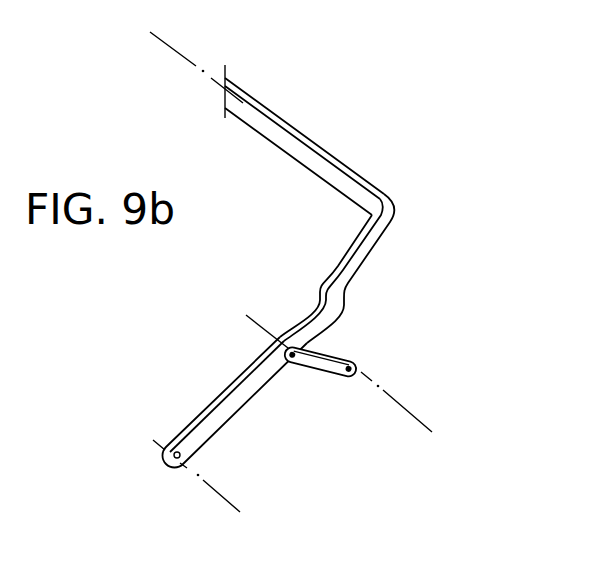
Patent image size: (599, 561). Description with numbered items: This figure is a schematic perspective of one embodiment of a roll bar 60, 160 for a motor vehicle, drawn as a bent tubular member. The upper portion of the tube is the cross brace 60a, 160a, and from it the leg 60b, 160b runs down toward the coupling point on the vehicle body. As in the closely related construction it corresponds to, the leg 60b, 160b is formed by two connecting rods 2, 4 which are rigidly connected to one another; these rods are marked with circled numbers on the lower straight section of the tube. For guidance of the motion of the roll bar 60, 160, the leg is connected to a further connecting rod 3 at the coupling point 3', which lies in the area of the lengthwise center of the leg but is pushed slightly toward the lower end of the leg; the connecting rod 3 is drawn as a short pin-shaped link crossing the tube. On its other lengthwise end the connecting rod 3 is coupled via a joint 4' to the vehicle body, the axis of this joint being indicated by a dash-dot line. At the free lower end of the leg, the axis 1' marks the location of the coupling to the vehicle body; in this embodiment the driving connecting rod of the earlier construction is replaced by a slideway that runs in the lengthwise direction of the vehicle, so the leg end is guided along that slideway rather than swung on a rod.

The roll bar 60 is at (351, 259).
The tubular hinge member (alternative embodiment) 160 is at (351, 259).
The cross brace 60a is at (315, 132).
The first leg of tubular member (alternative embodiment) 160a is at (272, 112).
The leg 60b is at (412, 268).
The second leg of tubular member (alternative embodiment) 160b is at (367, 254).
The connecting rod 2 is at (232, 397).
The connecting rod 4 is at (232, 397).
The connecting rod 3 is at (319, 396).
The coupling point 3' is at (320, 396).
The joint 4' is at (398, 392).
The joint 1' is at (196, 487).